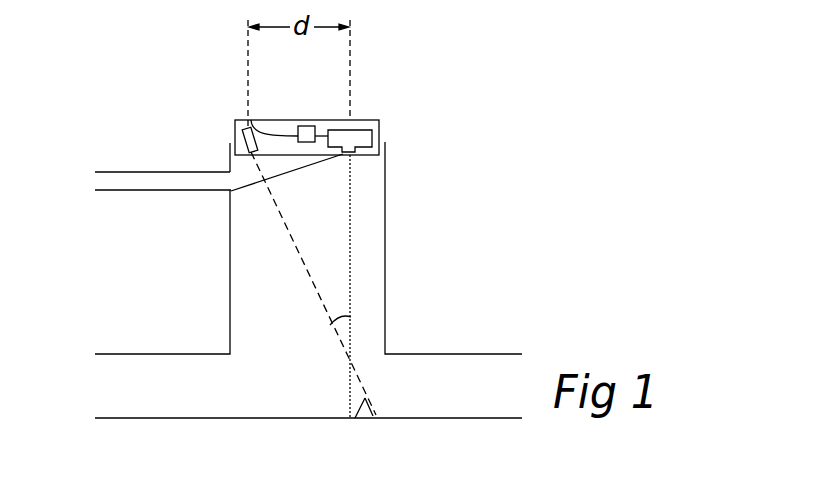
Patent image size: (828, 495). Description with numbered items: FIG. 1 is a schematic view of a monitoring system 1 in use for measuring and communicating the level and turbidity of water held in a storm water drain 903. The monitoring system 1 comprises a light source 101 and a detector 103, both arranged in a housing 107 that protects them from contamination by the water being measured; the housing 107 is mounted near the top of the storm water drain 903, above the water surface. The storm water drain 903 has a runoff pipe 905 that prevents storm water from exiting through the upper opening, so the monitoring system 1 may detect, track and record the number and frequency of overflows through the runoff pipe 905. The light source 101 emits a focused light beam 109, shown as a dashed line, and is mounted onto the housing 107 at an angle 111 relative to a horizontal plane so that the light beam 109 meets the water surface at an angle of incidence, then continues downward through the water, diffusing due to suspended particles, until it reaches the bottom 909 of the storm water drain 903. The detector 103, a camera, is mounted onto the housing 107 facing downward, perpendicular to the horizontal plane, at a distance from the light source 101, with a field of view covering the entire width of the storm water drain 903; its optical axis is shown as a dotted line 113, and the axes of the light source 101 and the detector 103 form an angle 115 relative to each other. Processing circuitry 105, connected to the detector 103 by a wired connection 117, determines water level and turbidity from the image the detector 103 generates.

The monitoring system 1 is at (408, 104).
The light source 101 is at (234, 143).
The detector 103 is at (360, 132).
The processing circuitry 105 is at (251, 120).
The housing 107 is at (380, 126).
The light beam 109 is at (297, 250).
The angle 111 is at (365, 398).
The dotted line 113 is at (352, 183).
The angle 115 is at (343, 316).
The wired connection 117 is at (325, 124).
The storm water drain 903 is at (412, 272).
The runoff pipe 905 is at (122, 184).
The bottom 909 is at (470, 418).